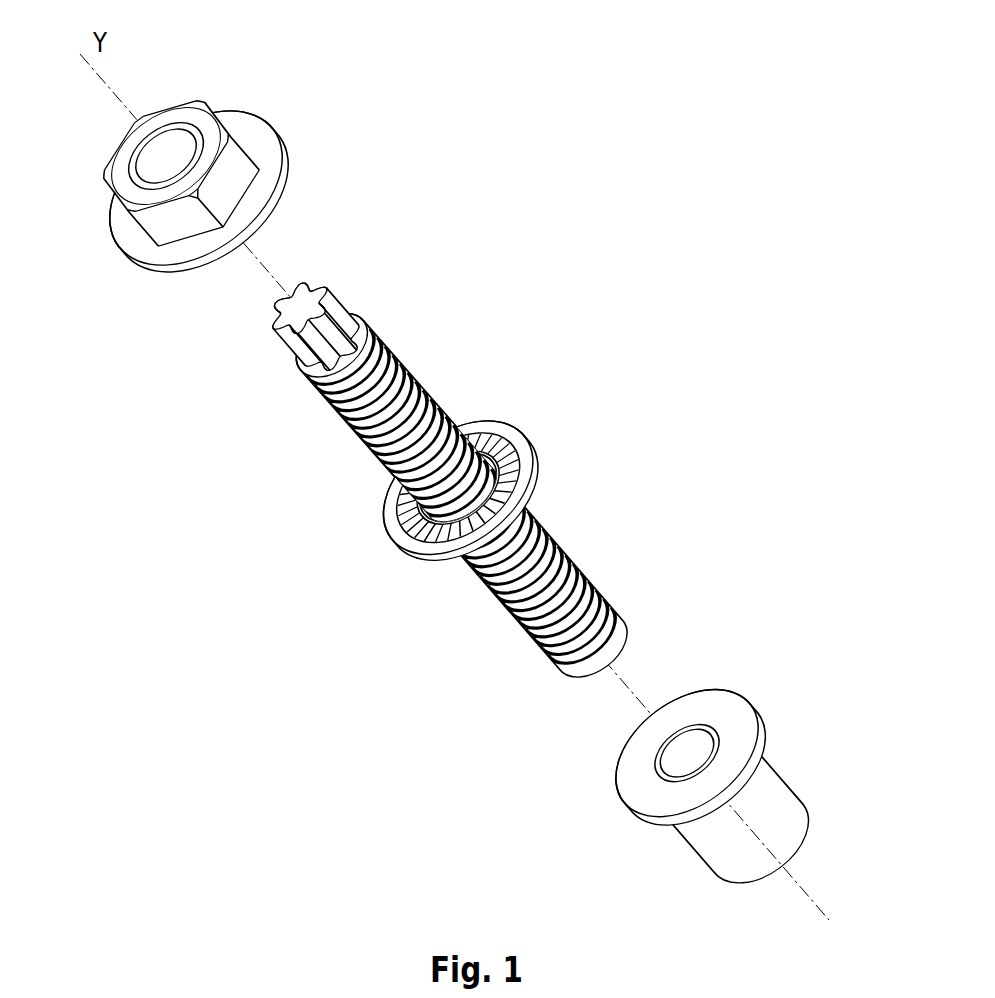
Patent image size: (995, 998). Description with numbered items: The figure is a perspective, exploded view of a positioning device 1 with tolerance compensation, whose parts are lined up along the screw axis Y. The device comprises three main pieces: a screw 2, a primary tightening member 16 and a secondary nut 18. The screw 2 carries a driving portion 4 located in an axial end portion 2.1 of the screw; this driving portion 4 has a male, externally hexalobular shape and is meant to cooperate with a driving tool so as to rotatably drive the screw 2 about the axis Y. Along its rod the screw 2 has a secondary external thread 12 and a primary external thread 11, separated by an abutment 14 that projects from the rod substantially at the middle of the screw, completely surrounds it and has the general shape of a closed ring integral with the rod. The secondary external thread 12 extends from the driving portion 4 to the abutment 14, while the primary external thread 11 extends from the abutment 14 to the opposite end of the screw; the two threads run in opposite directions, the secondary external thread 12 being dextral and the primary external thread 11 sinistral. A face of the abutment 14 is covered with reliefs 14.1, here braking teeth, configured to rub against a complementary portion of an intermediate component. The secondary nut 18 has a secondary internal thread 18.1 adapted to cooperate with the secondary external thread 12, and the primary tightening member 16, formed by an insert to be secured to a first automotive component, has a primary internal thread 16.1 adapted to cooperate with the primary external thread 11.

The positioning device 1 is at (587, 240).
The screw 2 is at (427, 193).
The axial end portion 2.1 is at (345, 302).
The driving portion 4 is at (312, 293).
The primary external thread 11 is at (528, 480).
The secondary external thread 12 is at (375, 310).
The abutment 14 is at (520, 453).
The reliefs 14.1 is at (397, 545).
The primary tightening member 16 is at (772, 813).
The primary internal thread 16.1 is at (670, 775).
The secondary nut 18 is at (257, 133).
The secondary internal thread 18.1 is at (143, 181).